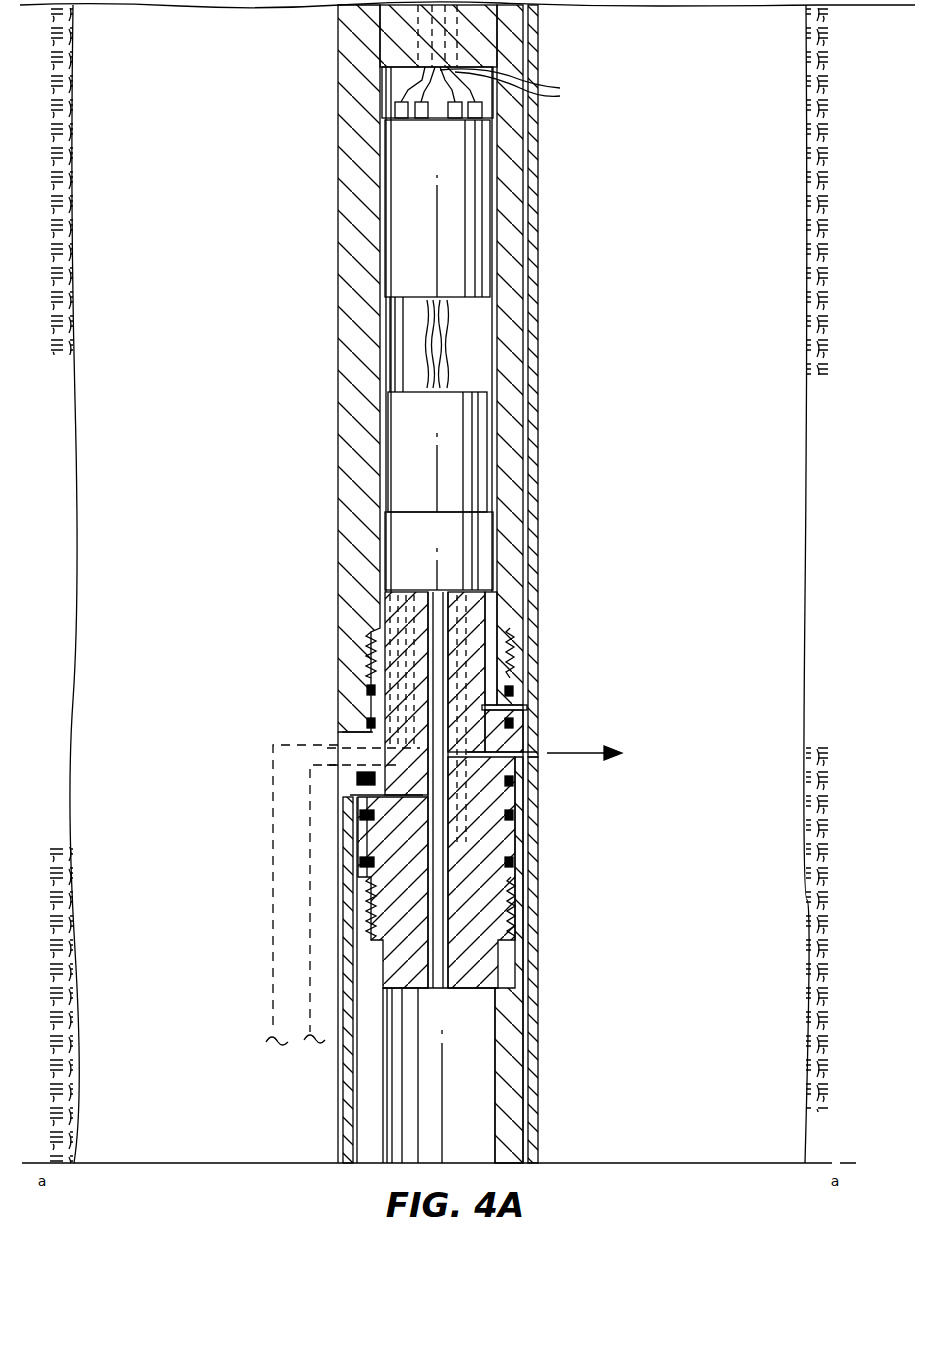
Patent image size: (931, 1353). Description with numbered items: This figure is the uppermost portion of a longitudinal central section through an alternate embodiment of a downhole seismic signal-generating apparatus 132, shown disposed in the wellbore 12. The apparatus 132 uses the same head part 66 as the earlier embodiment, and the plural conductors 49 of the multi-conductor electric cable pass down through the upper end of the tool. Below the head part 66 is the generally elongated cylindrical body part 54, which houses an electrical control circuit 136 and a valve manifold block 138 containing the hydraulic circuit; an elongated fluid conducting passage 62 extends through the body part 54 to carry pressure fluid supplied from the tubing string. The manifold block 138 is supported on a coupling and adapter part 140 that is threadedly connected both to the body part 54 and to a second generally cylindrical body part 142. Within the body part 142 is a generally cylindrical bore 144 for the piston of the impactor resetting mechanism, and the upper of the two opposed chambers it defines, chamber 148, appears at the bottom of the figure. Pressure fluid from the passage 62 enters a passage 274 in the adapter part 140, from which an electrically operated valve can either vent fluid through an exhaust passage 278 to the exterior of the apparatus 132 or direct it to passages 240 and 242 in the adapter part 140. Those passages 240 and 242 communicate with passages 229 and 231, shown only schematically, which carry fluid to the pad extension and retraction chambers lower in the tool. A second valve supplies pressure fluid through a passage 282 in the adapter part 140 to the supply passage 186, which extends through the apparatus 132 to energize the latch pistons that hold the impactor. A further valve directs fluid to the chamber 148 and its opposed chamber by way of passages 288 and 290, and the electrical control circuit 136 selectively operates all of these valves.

The wellbore 12 is at (75, 713).
The conductors 49 is at (515, 86).
The body part 54 is at (538, 255).
The fluid conducting passage 62 is at (520, 112).
The head part 66 is at (383, 43).
The downhole seismic signal-generating apparatus 132 is at (553, 500).
The electrical control circuit 136 is at (497, 190).
The valve manifold block 138 is at (490, 443).
The coupling and adapter part 140 is at (537, 765).
The second body part 142 is at (541, 990).
The cylindrical bore 144 is at (488, 1115).
The chamber 148 is at (424, 1026).
The supply passage 186 is at (353, 1093).
The passage 229 is at (307, 863).
The passage 231 is at (272, 927).
The passage 240 is at (419, 590).
The passage 242 is at (367, 645).
The passage 274 is at (483, 648).
The exhaust passage 278 is at (467, 745).
The passage 282 is at (367, 840).
The passage 288 is at (448, 942).
The passage 290 is at (527, 852).